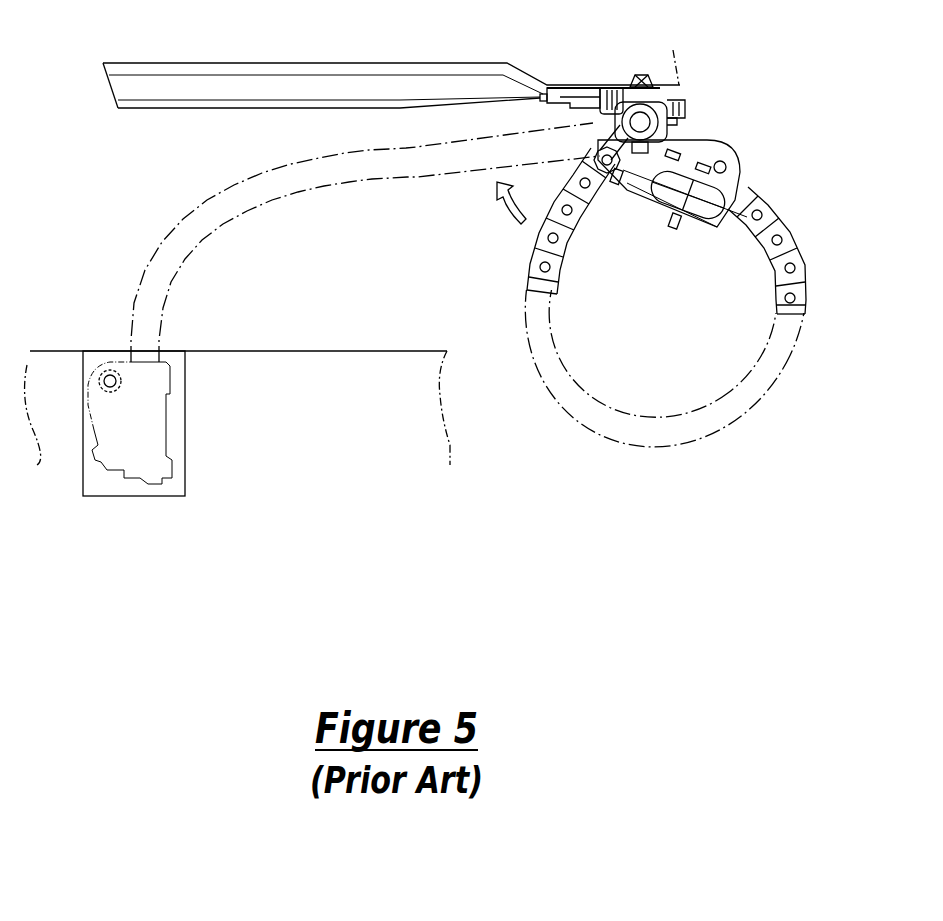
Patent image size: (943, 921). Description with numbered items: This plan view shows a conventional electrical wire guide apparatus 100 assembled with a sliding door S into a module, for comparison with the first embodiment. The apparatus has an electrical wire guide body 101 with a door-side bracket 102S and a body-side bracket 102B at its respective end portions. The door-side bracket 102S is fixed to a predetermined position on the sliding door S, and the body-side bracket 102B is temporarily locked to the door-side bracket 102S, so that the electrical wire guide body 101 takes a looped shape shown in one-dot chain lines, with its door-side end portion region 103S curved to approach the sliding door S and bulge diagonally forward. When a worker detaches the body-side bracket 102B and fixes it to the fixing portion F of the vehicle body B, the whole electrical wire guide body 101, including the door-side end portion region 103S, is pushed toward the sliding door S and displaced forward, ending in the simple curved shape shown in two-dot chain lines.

The sliding door S is at (138, 90).
The vehicle body B is at (52, 360).
The fixing portion F is at (108, 487).
The electrical wire guide apparatus 100 is at (325, 222).
The electrical wire guide body 101 is at (252, 208).
The door-side bracket 102S is at (668, 120).
The body-side bracket 102B is at (713, 155).
The door-side end portion region 103S is at (577, 208).